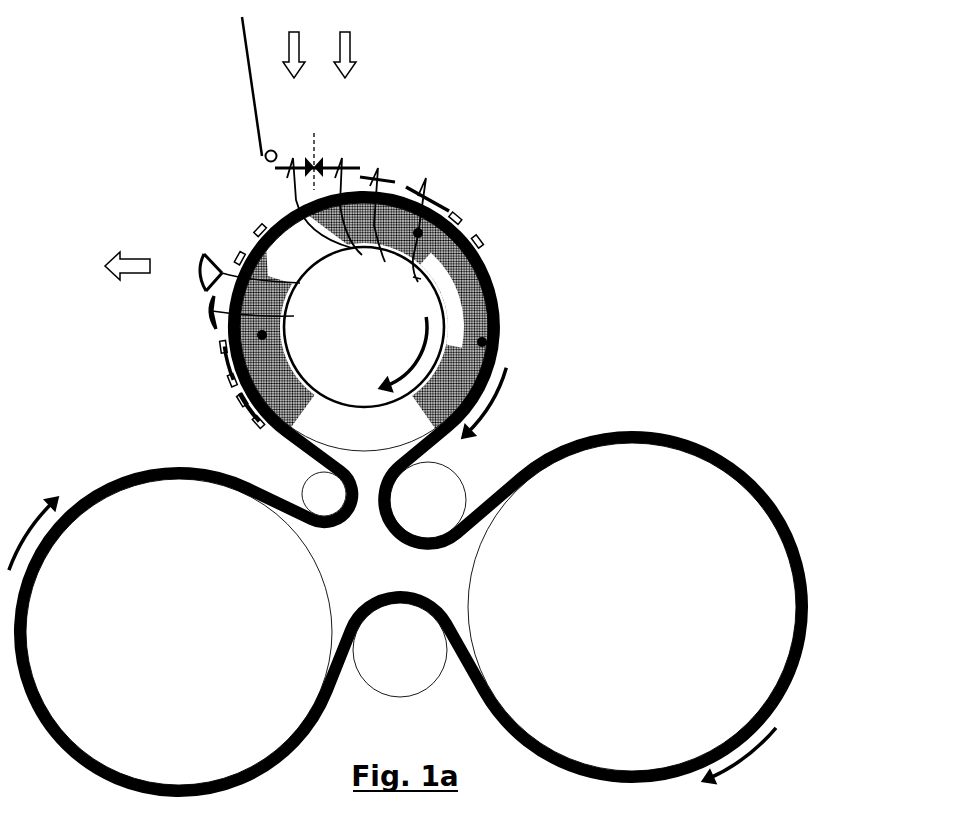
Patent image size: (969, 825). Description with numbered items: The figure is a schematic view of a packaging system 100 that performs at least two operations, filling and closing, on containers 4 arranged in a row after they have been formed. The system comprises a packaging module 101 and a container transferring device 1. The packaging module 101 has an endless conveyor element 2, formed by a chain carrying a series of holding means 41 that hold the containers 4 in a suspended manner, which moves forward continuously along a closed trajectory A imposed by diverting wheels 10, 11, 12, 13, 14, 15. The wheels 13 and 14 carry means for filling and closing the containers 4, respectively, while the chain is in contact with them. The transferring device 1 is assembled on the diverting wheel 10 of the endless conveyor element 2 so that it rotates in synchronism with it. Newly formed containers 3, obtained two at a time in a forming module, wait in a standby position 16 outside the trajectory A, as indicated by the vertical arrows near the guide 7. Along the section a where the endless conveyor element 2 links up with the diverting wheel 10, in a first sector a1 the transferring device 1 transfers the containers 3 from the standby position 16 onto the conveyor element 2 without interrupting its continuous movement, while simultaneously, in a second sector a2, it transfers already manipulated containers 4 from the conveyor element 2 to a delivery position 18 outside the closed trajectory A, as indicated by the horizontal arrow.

The packaging system 100 is at (545, 158).
The packaging module 101 is at (627, 428).
The container transferring device 1 is at (353, 337).
The endless conveyor element 2 is at (680, 437).
The formed containers 3 is at (285, 167).
The containers 4 is at (218, 363).
The guide bar 7 is at (465, 141).
The diverting wheel 10 is at (349, 447).
The diverting wheel 11 is at (400, 514).
The diverting wheel 12 is at (309, 501).
The diverting wheel 13 is at (592, 612).
The diverting wheel 14 is at (146, 644).
The diverting wheel 15 is at (374, 659).
The standby position 16 is at (335, 55).
The delivery position 18 is at (120, 261).
The holding means 41 is at (484, 238).
The closed trajectory A is at (500, 316).
The section a is at (486, 343).
The first sector a1 is at (422, 236).
The second sector a2 is at (264, 341).